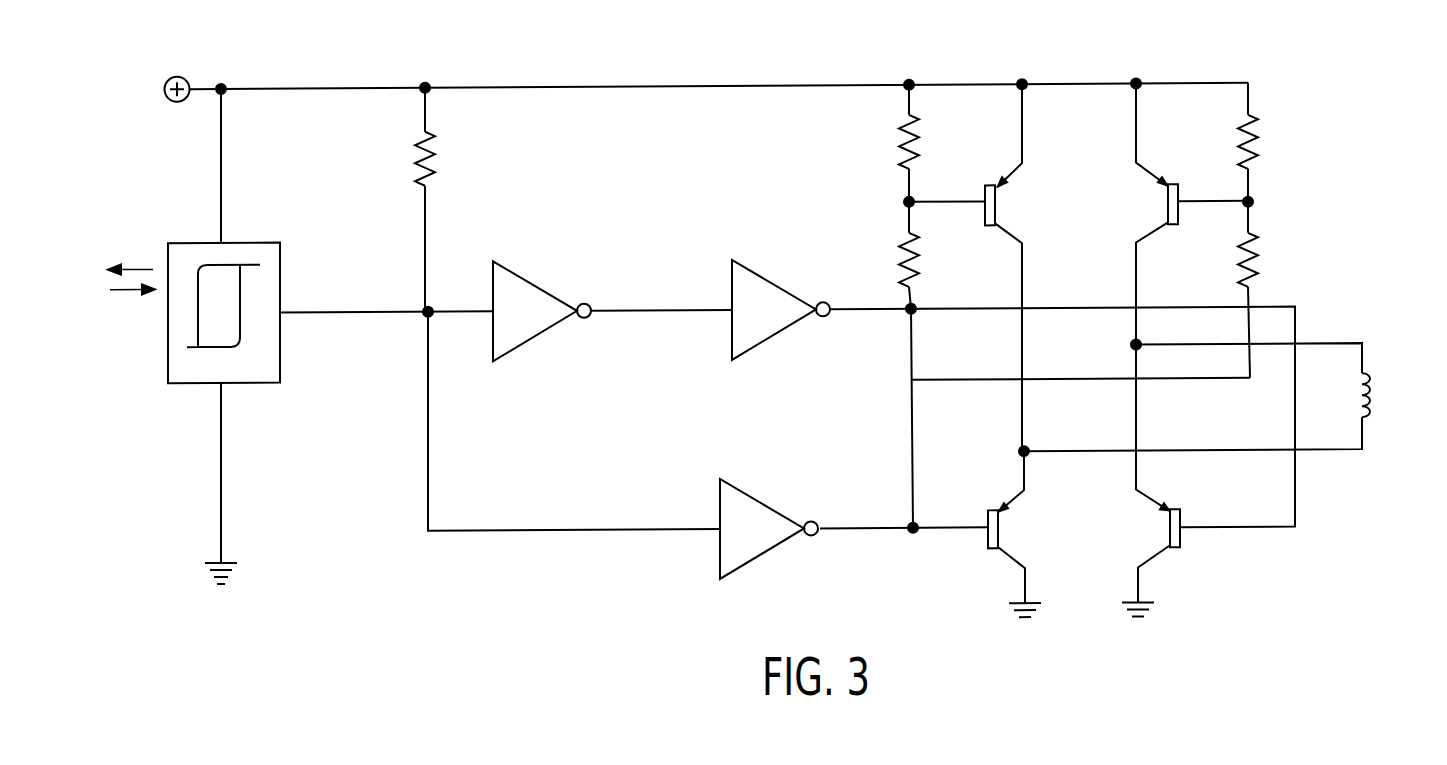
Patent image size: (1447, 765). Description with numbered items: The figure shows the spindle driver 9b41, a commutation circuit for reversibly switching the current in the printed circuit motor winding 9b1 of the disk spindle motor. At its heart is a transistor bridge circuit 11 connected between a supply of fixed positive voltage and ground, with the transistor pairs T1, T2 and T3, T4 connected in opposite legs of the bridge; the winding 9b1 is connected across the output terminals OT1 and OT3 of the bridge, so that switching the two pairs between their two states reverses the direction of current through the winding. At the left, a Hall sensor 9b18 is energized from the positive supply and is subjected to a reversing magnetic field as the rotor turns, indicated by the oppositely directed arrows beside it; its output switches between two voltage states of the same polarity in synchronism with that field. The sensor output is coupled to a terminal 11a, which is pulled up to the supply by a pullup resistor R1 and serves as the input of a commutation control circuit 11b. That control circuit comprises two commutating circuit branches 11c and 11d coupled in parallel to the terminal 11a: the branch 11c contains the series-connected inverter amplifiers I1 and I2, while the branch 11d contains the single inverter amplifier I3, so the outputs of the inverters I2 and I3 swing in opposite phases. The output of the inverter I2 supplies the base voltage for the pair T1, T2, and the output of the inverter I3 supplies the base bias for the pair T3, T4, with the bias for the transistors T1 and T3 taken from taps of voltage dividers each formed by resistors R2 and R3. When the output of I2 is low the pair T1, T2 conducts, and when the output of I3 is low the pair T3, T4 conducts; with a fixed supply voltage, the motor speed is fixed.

The spindle driver 9b41 is at (872, 72).
The Hall sensor 9b18 is at (262, 376).
The transistor bridge circuit 11 is at (1078, 350).
The terminal 11a is at (426, 316).
The commutation control circuit 11b is at (629, 423).
The commutating circuit branch 11c is at (677, 313).
The commutating circuit branch 11d is at (678, 532).
The printed circuit motor winding 9b1 is at (1372, 411).
The pullup resistor R1 is at (442, 199).
The resistor R2 is at (1076, 144).
The resistor R3 is at (1077, 290).
The transistor T1 is at (972, 268).
The transistor T2 is at (1151, 480).
The transistor T3 is at (1184, 214).
The transistor T4 is at (1015, 534).
The inverter amplifier I1 is at (542, 311).
The inverter amplifier I2 is at (781, 309).
The inverter amplifier I3 is at (769, 528).
The output terminal OT1 is at (1112, 345).
The output terminal OT3 is at (997, 450).